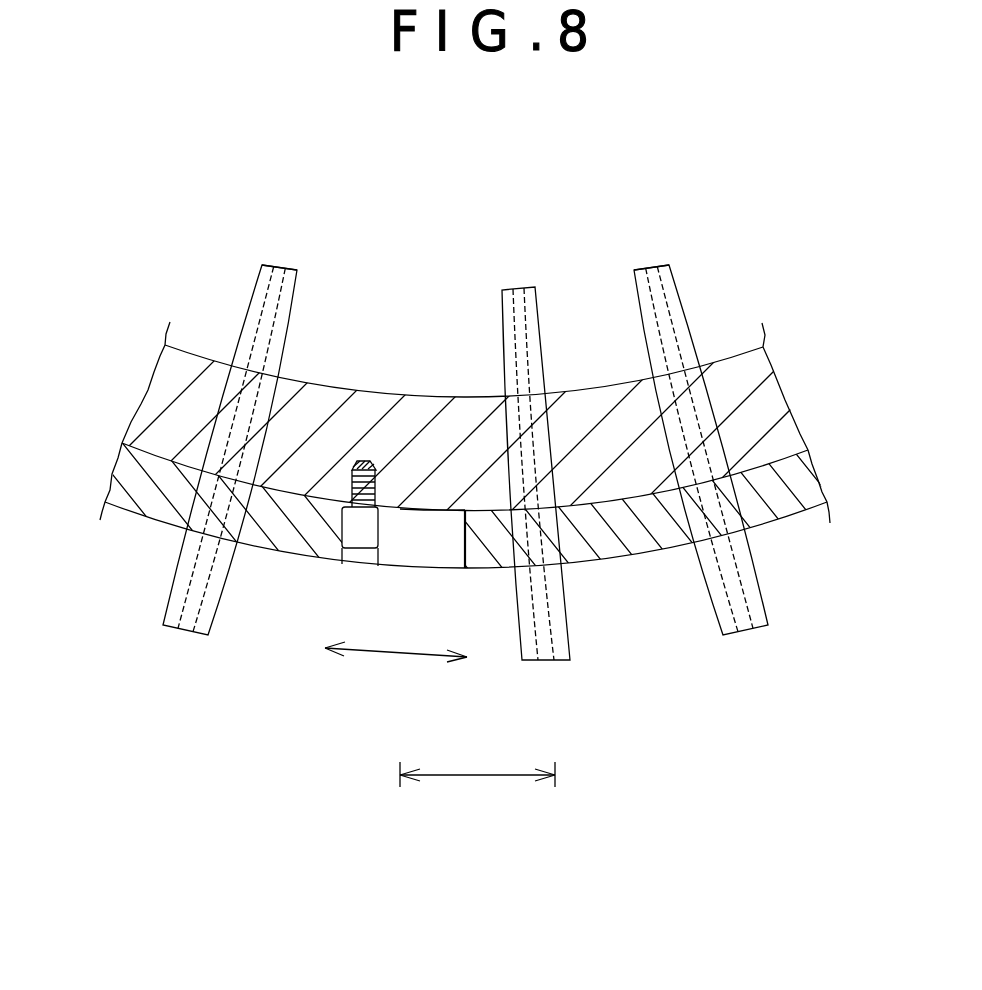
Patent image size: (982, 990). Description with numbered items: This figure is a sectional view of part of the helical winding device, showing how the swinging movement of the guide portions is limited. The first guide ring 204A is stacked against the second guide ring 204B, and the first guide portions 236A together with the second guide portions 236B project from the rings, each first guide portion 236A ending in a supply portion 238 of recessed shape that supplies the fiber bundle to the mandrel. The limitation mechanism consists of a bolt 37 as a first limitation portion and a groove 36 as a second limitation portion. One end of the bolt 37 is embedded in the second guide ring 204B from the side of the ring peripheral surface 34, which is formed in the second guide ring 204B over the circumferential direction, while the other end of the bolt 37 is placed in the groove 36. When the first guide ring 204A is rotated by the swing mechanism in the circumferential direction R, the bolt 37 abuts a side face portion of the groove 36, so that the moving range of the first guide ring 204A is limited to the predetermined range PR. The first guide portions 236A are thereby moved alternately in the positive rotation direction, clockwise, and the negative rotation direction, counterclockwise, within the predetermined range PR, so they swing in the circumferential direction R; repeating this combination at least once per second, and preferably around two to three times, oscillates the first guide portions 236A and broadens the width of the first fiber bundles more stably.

The first guide ring 204A is at (792, 505).
The second guide ring 204B is at (419, 407).
The ring peripheral surface 34 is at (434, 512).
The groove 36 is at (434, 567).
The bolt 37 is at (357, 536).
The first guide portion 236A is at (547, 662).
The second guide portion 236B is at (173, 565).
The supply portion 238 is at (282, 265).
The circumferential direction R is at (395, 660).
The predetermined range PR is at (465, 778).